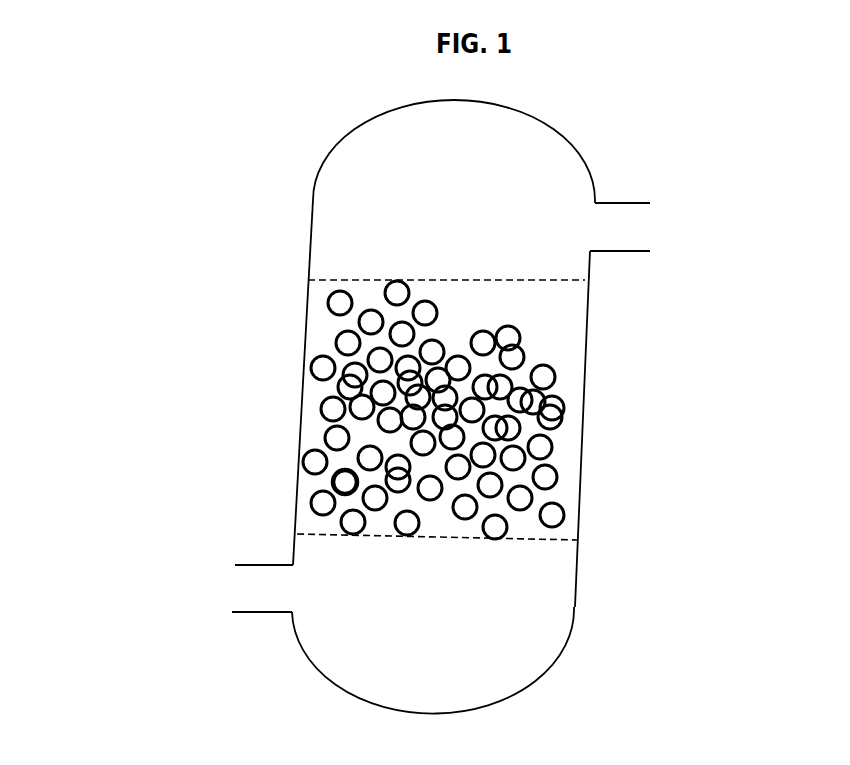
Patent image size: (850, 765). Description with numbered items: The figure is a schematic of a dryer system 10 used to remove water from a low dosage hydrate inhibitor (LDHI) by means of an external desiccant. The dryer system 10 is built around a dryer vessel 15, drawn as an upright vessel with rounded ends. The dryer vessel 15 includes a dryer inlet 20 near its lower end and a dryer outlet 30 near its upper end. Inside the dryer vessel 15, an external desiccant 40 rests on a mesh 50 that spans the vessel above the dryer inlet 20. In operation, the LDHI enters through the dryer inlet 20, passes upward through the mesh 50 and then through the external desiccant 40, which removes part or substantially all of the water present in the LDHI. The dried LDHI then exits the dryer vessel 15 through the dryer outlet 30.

The dryer system 10 is at (598, 133).
The dryer vessel 15 is at (608, 180).
The dryer outlet 30 is at (650, 227).
The dryer inlet 20 is at (233, 591).
The external desiccant 40 is at (567, 368).
The mesh 50 is at (538, 541).